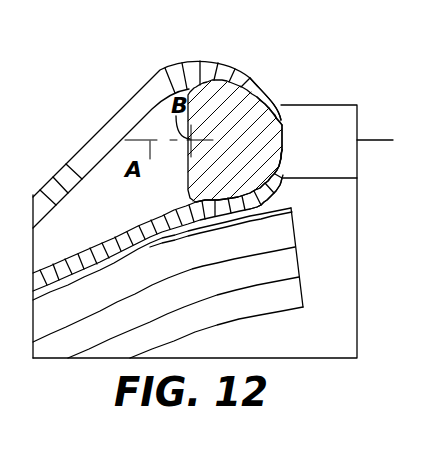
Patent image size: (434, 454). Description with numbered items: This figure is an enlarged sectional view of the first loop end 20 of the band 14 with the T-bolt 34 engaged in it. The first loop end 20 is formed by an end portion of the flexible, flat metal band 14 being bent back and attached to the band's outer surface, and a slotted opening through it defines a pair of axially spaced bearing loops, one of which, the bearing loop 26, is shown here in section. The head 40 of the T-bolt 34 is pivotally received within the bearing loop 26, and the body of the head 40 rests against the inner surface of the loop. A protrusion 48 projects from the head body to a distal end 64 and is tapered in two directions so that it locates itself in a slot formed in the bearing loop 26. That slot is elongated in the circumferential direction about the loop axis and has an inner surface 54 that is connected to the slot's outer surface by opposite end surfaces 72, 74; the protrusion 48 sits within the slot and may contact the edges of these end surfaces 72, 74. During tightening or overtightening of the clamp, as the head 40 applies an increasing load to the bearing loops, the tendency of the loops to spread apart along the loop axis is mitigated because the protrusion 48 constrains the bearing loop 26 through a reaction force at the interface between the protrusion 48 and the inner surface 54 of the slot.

The band 14 is at (35, 195).
The first loop end 20 is at (128, 235).
The first bearing loop 26 is at (113, 118).
The T-bolt 34 is at (357, 105).
The head 40 is at (202, 97).
The protrusion 48 is at (281, 130).
The inner surface 54 is at (276, 110).
The distal end 64 is at (276, 157).
The end surface 72 is at (272, 106).
The end surface 74 is at (253, 187).